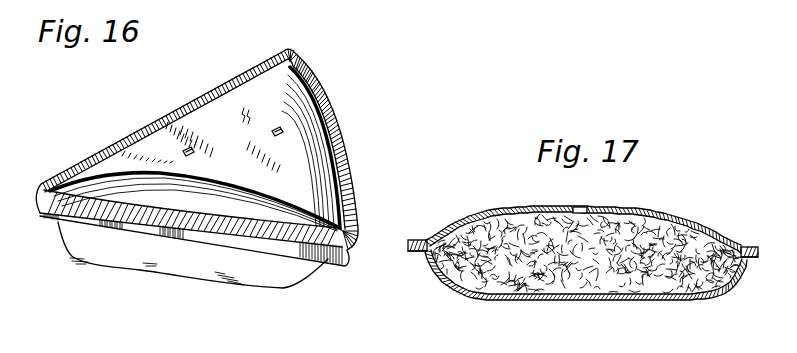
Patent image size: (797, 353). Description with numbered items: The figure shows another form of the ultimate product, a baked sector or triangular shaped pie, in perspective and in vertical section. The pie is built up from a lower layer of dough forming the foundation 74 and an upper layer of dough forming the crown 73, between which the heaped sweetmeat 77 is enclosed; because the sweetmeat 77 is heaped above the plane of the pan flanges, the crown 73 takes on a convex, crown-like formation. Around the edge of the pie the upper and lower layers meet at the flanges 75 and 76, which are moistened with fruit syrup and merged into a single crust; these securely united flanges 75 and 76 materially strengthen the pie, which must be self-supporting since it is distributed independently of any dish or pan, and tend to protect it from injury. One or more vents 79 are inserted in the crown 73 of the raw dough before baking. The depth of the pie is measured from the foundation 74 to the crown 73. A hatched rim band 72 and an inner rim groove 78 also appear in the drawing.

In FIG. 16, the hatched rim band of cover 72 is at (337, 112).
In FIG. 16, the crown 73 is at (98, 161).
In FIG. 17, the crown 73 is at (650, 210).
In FIG. 16, the foundation 74 is at (218, 271).
In FIG. 17, the foundation 74 is at (568, 296).
In FIG. 16, the flange 75 is at (362, 224).
In FIG. 17, the flange 75 is at (414, 208).
In FIG. 16, the flange 76 is at (340, 262).
In FIG. 17, the flange 76 is at (413, 260).
In FIG. 17, the sweetmeat 77 is at (662, 284).
In FIG. 16, the inner rim groove 78 is at (342, 159).
In FIG. 16, the vent 79 is at (186, 157).
In FIG. 17, the vent 79 is at (583, 207).